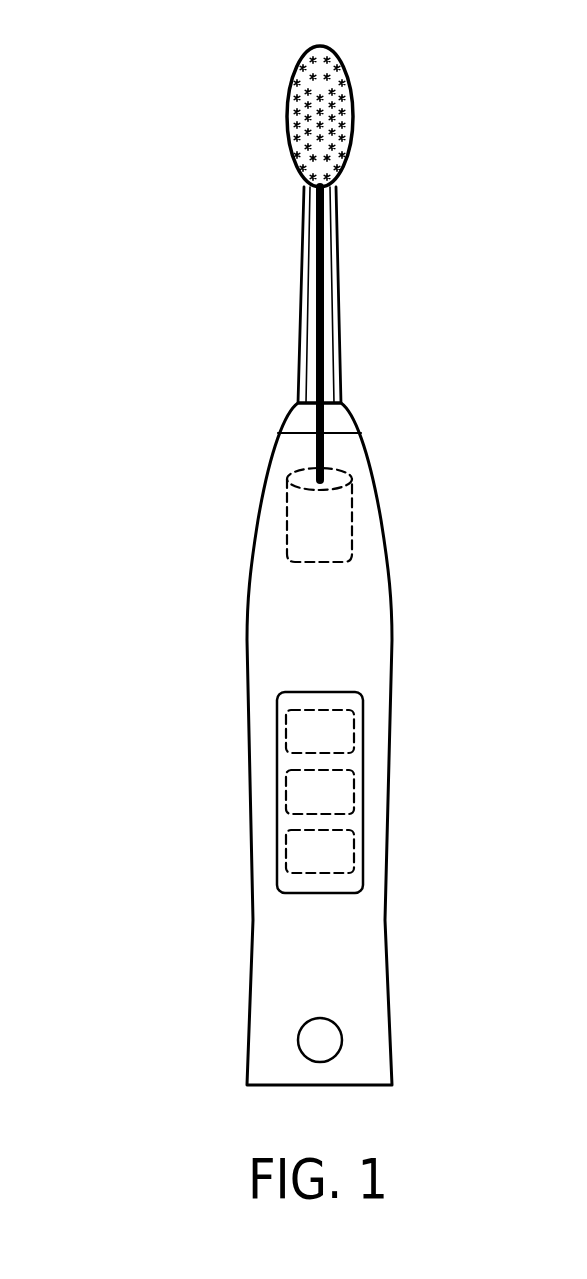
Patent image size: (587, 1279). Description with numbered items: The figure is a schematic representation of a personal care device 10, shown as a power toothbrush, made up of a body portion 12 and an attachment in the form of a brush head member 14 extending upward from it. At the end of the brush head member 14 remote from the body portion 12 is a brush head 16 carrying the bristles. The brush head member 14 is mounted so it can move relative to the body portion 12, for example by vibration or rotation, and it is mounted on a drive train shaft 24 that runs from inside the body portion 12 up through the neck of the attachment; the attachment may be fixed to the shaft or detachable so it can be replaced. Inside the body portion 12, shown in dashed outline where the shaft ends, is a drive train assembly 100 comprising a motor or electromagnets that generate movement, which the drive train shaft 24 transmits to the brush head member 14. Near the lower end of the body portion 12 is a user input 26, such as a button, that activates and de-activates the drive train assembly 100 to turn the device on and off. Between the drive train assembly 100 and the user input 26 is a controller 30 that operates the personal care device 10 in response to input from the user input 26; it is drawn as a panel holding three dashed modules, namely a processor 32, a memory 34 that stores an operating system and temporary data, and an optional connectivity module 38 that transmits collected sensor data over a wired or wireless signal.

The personal care device 10 is at (115, 105).
The body portion 12 is at (243, 613).
The brush head member 14 is at (297, 277).
The brush head 16 is at (287, 120).
The drive train shaft 24 is at (319, 345).
The user input 26 is at (308, 1040).
The controller 30 is at (285, 762).
The processor 32 is at (345, 730).
The memory 34 is at (345, 789).
The connectivity module 38 is at (345, 853).
The drive train assembly 100 is at (338, 527).